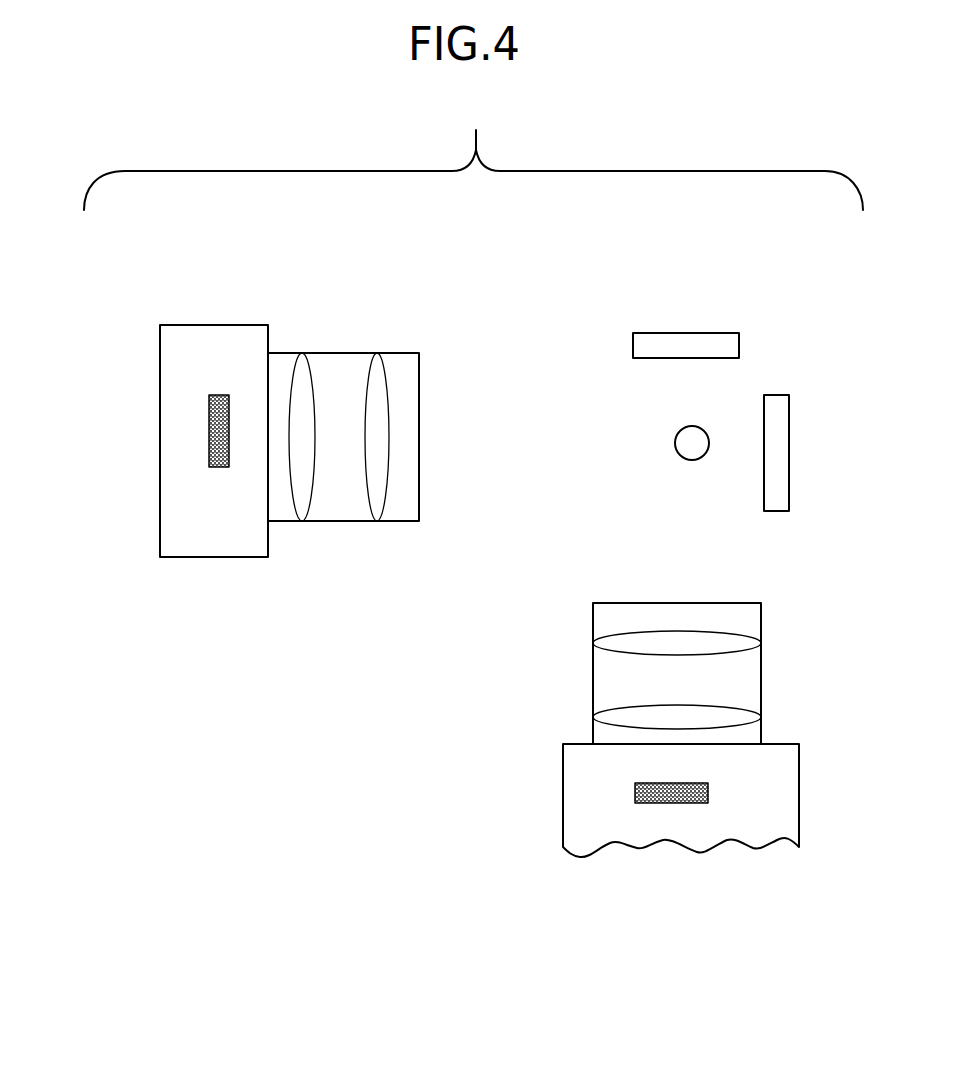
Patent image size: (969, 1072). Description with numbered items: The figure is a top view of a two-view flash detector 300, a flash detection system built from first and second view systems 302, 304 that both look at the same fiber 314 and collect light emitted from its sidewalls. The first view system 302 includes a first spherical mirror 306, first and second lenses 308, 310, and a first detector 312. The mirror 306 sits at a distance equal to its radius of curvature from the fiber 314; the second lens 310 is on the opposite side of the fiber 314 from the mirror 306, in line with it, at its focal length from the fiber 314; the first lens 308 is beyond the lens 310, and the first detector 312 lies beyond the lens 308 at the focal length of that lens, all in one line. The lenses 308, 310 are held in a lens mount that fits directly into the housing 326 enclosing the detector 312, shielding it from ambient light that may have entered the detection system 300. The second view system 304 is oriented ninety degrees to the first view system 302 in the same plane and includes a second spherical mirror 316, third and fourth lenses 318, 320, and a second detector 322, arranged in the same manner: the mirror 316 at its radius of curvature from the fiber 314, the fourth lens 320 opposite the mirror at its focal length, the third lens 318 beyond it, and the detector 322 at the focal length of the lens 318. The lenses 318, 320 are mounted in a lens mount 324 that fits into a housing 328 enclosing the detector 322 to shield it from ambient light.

The two-view flash detector 300 is at (430, 280).
The first view system 302 is at (148, 448).
The second view system 304 is at (660, 880).
The first spherical mirror 306 is at (790, 455).
The first lens 308 is at (295, 355).
The second lens 310 is at (385, 373).
The first detector 312 is at (213, 467).
The fiber 314 is at (678, 450).
The second spherical mirror 316 is at (668, 333).
The third lens 318 is at (764, 733).
The fourth lens 320 is at (764, 663).
The second detector 322 is at (708, 803).
The lens mount 324 is at (627, 603).
The housing 326 is at (250, 557).
The housing 328 is at (563, 793).